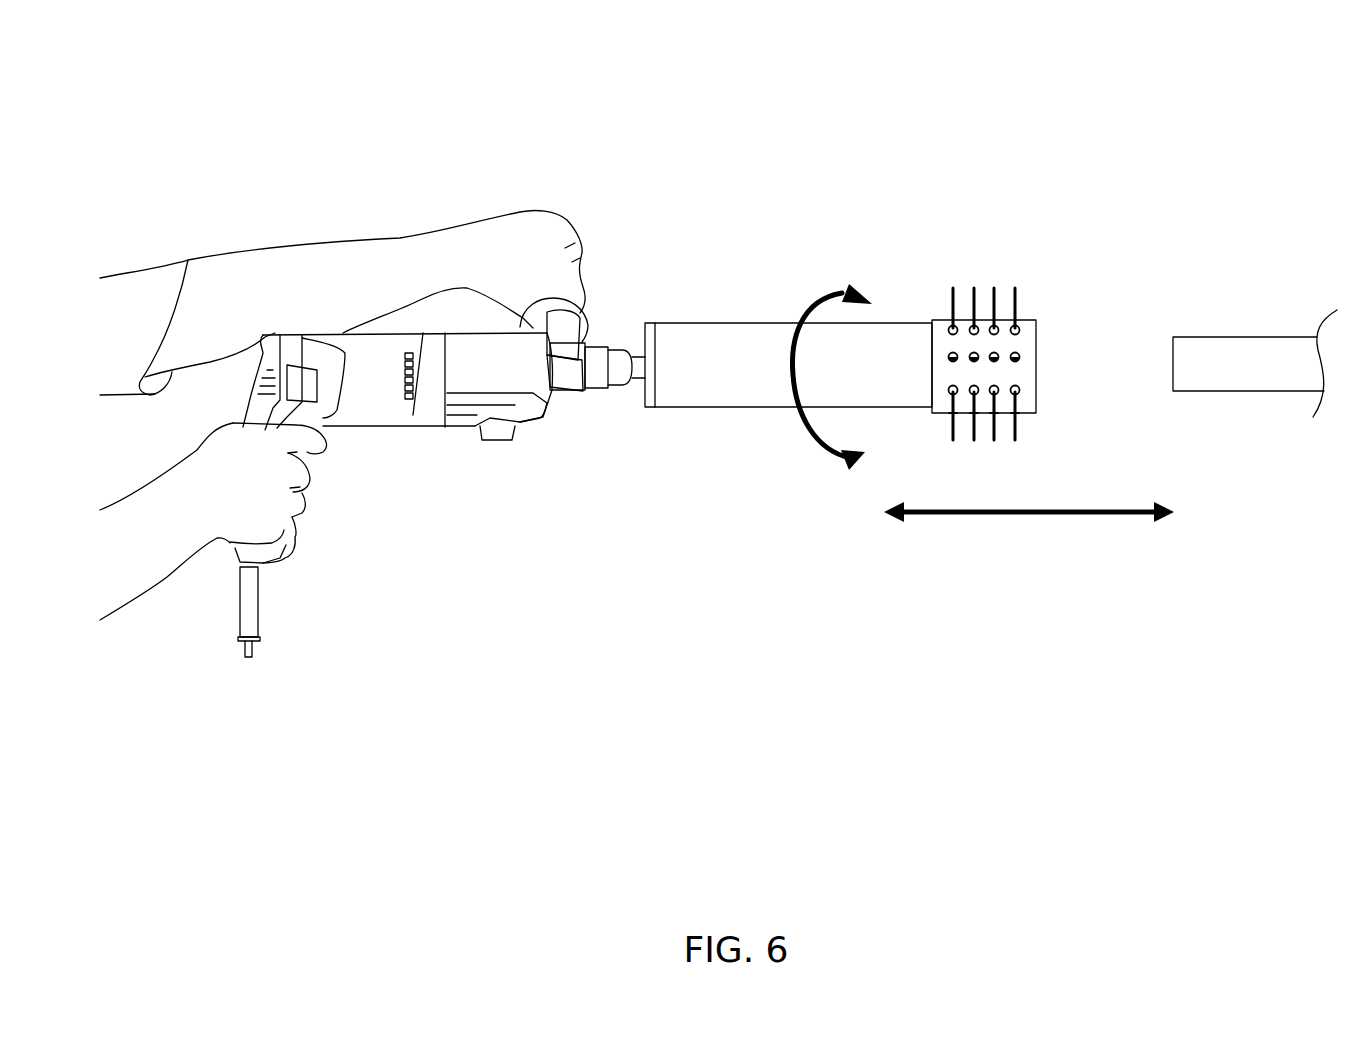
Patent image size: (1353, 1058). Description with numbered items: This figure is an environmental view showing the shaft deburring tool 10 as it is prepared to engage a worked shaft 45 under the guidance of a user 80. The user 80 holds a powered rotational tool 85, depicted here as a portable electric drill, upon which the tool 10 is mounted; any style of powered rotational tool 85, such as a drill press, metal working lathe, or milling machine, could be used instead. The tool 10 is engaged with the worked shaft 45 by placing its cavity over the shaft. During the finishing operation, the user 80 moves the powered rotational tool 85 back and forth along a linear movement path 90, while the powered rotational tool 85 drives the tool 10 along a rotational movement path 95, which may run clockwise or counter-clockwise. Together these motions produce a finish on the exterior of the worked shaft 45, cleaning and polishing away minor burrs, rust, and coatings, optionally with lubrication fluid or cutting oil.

The shaft deburring tool 10 is at (769, 353).
The worked shaft 45 is at (1228, 368).
The user 80 is at (343, 277).
The powered rotational tool 85 is at (430, 387).
The linear movement path 90 is at (1081, 500).
The rotational movement path 95 is at (878, 283).